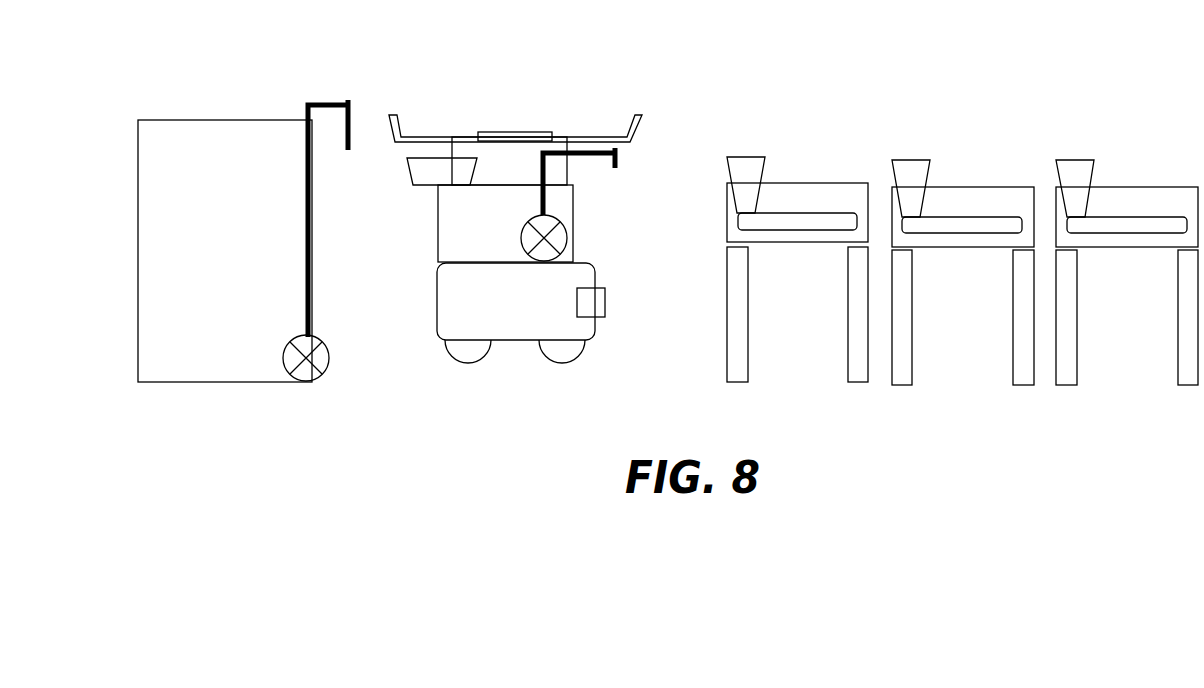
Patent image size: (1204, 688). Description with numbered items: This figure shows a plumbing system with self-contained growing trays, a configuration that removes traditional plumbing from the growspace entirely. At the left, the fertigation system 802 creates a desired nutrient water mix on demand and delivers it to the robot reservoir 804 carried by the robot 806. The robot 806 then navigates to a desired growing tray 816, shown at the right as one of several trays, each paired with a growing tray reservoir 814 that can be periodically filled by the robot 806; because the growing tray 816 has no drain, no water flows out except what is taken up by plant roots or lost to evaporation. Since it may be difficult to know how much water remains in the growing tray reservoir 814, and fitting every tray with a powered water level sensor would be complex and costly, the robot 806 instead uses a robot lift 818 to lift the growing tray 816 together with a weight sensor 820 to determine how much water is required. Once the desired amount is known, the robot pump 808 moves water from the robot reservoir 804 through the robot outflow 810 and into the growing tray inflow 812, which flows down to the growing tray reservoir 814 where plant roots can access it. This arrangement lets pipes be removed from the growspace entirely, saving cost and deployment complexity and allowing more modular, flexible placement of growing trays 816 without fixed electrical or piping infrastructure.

The fertigation system 802 is at (243, 241).
The robot reservoir 804 is at (448, 222).
The robot 806 is at (521, 313).
The robot pump 808 is at (567, 238).
The robot outflow 810 is at (598, 152).
The growing tray inflow 812 is at (745, 157).
The growing tray reservoir 814 is at (795, 230).
The growing tray 816 is at (830, 183).
The robot lift 818 is at (452, 127).
The weight sensor 820 is at (540, 132).